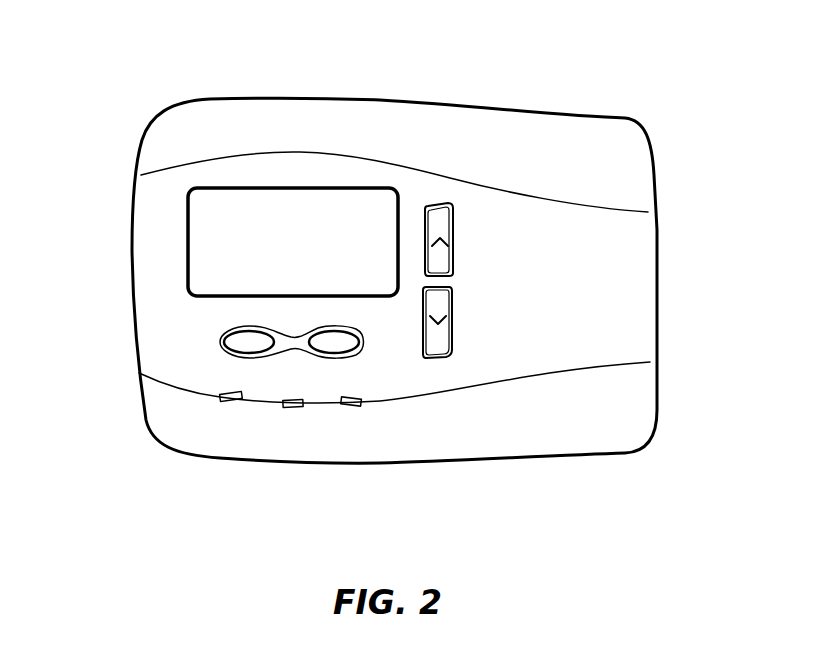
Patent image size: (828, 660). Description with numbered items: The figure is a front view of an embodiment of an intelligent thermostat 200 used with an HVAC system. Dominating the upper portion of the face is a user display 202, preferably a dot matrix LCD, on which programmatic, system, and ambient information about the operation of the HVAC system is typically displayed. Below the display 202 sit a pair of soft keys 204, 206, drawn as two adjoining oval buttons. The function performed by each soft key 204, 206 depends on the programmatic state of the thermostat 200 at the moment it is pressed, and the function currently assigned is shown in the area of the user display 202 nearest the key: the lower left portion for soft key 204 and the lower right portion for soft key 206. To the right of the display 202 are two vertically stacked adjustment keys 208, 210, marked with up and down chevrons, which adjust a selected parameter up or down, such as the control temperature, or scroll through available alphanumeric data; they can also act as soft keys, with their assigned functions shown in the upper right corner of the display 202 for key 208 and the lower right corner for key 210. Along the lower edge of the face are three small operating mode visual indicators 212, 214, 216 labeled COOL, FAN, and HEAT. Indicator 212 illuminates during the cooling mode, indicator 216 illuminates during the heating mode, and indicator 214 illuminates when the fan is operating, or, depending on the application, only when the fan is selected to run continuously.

The thermostat 200 is at (595, 83).
The user display 202 is at (218, 246).
The soft key 204 is at (233, 343).
The soft key 206 is at (352, 343).
The adjustment key 208 is at (435, 203).
The adjustment key 210 is at (437, 350).
The operating mode visual indicator 212 is at (243, 397).
The operating mode visual indicator 214 is at (302, 404).
The operating mode visual indicator 216 is at (361, 402).